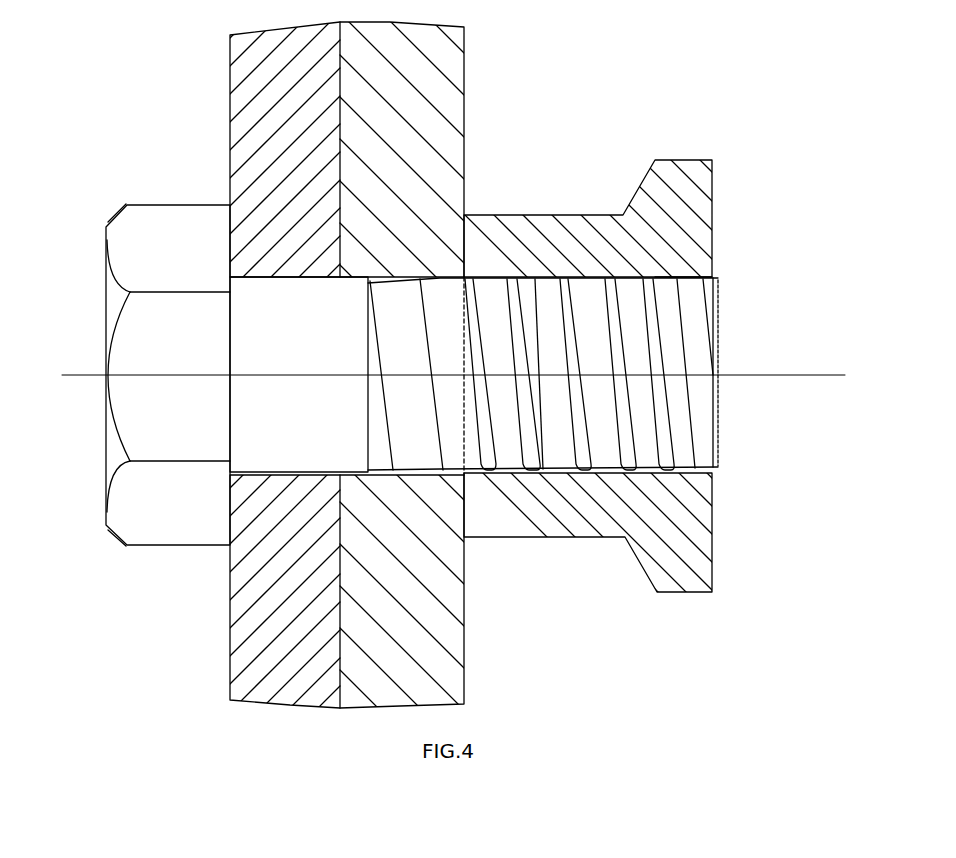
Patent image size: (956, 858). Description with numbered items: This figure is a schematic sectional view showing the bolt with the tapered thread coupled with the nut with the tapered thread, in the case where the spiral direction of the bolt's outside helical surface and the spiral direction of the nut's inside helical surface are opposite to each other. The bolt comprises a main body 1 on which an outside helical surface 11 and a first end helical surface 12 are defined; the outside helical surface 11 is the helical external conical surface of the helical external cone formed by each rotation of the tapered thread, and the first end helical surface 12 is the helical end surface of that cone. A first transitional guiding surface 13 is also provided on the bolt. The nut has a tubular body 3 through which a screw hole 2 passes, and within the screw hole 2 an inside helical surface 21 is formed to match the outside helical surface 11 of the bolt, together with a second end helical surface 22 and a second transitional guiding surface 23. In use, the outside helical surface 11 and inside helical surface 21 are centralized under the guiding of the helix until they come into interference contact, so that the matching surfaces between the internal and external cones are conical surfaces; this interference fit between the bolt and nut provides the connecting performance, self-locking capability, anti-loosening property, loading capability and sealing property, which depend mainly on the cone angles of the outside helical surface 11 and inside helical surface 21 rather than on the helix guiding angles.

The main body 1 is at (247, 318).
The outside helical surface 11 is at (539, 312).
The first end helical surface 12 is at (587, 413).
The first transitional guiding surface 13 is at (618, 277).
The screw hole 2 is at (653, 482).
The inside helical surface 21 is at (675, 278).
The second end helical surface 22 is at (520, 425).
The second transitional guiding surface 23 is at (655, 278).
The tubular body 3 is at (684, 186).